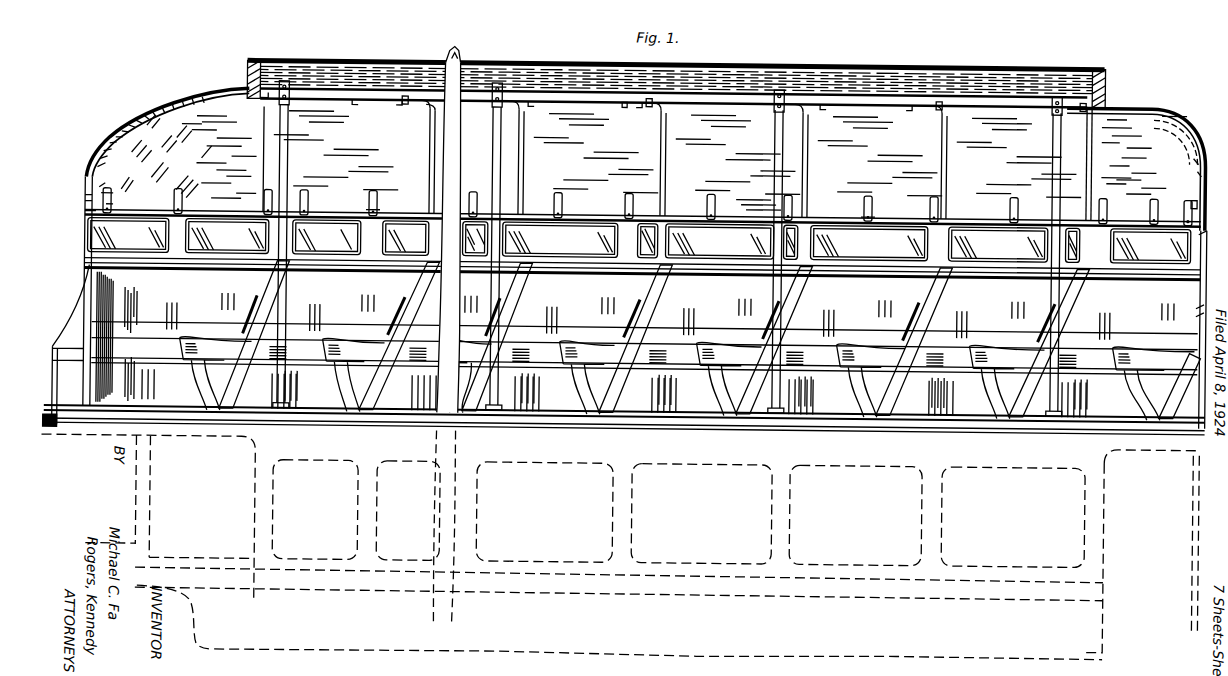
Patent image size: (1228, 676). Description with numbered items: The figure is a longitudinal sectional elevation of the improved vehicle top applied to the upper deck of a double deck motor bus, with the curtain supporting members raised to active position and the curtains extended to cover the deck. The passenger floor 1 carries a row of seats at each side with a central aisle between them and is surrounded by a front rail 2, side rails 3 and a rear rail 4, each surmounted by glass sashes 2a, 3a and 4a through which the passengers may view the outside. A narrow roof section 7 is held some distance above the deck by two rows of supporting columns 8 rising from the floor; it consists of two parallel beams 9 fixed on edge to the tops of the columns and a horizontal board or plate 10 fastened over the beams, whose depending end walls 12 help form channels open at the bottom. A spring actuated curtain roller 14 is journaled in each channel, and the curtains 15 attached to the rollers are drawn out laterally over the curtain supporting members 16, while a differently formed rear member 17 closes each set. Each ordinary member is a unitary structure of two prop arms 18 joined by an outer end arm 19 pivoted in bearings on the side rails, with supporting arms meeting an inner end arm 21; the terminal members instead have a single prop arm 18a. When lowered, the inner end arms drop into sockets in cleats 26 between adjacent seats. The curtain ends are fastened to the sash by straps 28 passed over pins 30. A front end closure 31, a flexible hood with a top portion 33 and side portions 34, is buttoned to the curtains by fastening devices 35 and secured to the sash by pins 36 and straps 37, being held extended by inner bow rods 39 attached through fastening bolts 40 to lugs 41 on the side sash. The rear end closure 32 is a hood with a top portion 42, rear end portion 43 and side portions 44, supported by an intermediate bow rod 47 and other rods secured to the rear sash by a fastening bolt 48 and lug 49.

The passenger floor 1 is at (722, 417).
The front rail 2 is at (82, 271).
The front sash 2a is at (85, 221).
The side rail 3 is at (718, 275).
The side sash 3a is at (340, 228).
The rear rail 4 is at (1190, 282).
The rear sash 4a is at (1204, 224).
The roof section 7 is at (427, 61).
The supporting columns 8 is at (287, 136).
The parallel beams 9 is at (853, 72).
The horizontal board or plate 10 is at (748, 66).
The depending end walls 12 is at (245, 76).
The curtain roller 14 is at (456, 51).
The curtains 15 is at (677, 162).
The curtain supporting members 16 is at (405, 100).
The rear curtain supporting member 17 is at (1090, 124).
The prop arms 18 is at (524, 164).
The single prop arm 18a is at (1090, 178).
The outer end arm 19 is at (607, 275).
The inner end arm 21 is at (622, 105).
The cleats 26 is at (350, 105).
The straps 28 is at (368, 195).
The pins 30 is at (368, 207).
The front end closure 31 is at (167, 133).
The rear end closure 32 is at (1178, 116).
The top portion 33 is at (177, 108).
The side portions 34 is at (219, 157).
The fastening devices or buttons 35 is at (262, 99).
The pins or buttons 36 is at (88, 200).
The straps 37 is at (102, 190).
The inner bow rods 39 is at (153, 126).
The fastening bolts 40 is at (112, 207).
The lugs 41 is at (103, 200).
The top portion 42 is at (1143, 108).
The rear end portion 43 is at (1200, 163).
The side portions 44 is at (1107, 166).
The intermediate bow rod 47 is at (1197, 150).
The fastening bolt 48 is at (1183, 204).
The lug 49 is at (1193, 193).